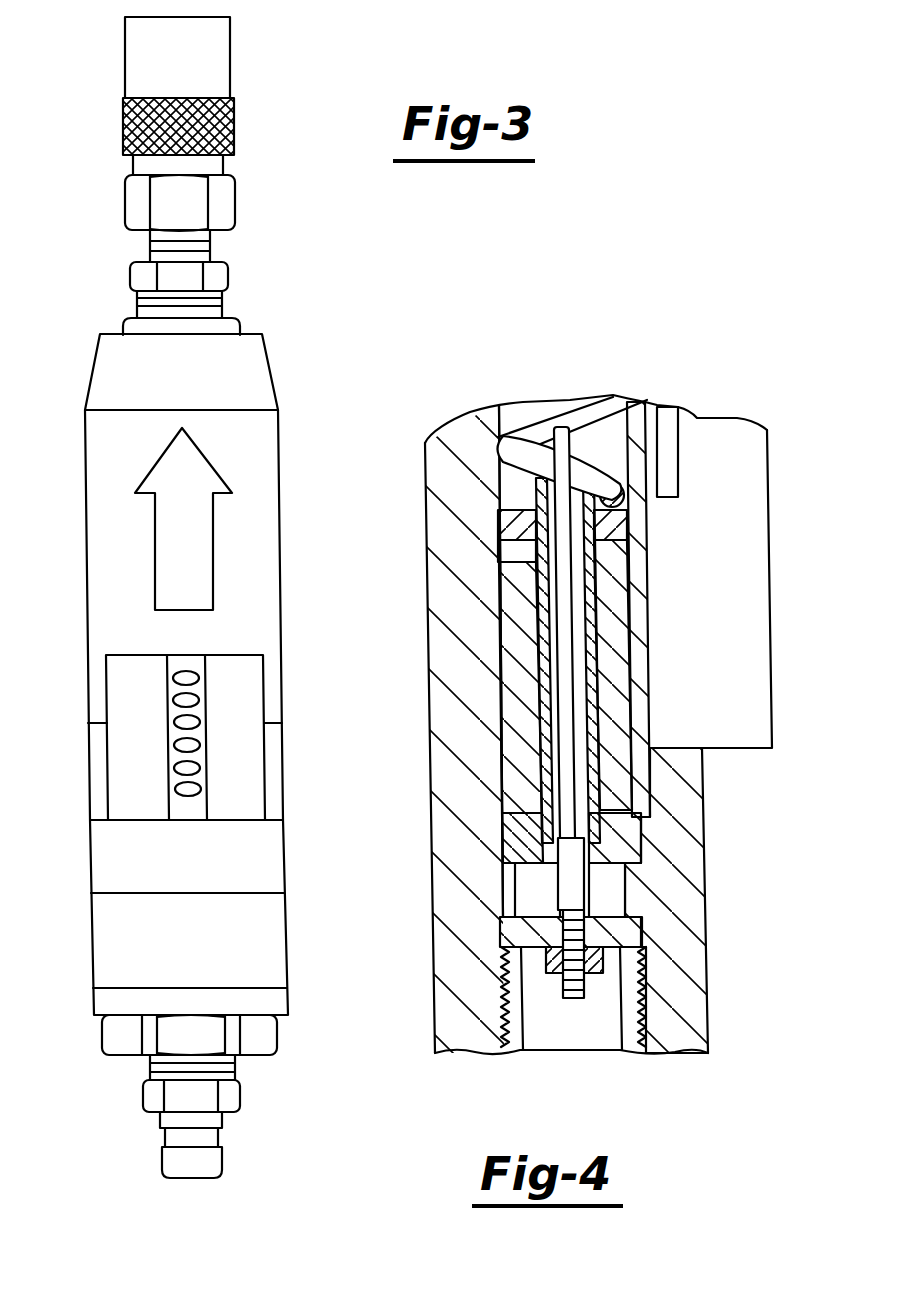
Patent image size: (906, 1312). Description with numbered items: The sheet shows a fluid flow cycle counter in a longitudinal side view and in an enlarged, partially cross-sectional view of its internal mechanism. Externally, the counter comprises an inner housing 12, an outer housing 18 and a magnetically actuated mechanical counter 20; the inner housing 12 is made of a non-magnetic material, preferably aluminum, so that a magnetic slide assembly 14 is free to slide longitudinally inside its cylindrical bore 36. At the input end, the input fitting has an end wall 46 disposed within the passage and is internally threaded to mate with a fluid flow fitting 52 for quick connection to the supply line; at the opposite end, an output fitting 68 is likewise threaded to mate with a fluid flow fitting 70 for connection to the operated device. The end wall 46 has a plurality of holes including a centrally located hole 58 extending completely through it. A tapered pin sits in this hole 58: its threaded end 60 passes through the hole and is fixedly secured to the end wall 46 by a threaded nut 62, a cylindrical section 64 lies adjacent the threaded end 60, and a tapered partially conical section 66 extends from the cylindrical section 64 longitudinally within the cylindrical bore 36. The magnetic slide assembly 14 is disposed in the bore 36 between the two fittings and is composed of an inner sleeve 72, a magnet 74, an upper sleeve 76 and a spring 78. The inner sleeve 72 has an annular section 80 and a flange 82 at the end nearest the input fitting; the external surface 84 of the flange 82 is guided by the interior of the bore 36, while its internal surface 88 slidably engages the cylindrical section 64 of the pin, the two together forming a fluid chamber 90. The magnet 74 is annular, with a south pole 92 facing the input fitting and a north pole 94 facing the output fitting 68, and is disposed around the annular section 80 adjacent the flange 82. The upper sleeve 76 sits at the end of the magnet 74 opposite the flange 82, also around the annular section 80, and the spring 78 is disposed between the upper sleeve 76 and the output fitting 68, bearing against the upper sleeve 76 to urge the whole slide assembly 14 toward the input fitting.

In FIG. 3, the inner housing 12 is at (108, 935).
In FIG. 4, the magnetic slide assembly 14 is at (510, 577).
In FIG. 3, the outer housing 18 is at (258, 378).
In FIG. 3, the magnetically actuated mechanical counter 20 is at (123, 687).
In FIG. 4, the magnetically actuated mechanical counter 20 is at (733, 552).
In FIG. 4, the cylindrical bore 36 is at (598, 437).
In FIG. 4, the end wall 46 is at (628, 942).
In FIG. 3, the fluid flow fitting 52 is at (210, 1160).
In FIG. 4, the centrally located hole 58 is at (587, 928).
In FIG. 4, the threaded end 60 is at (573, 1000).
In FIG. 4, the threaded nut 62 is at (598, 957).
In FIG. 4, the cylindrical section 64 is at (578, 887).
In FIG. 4, the tapered partially conical section 66 is at (565, 665).
In FIG. 3, the output fitting 68 is at (140, 278).
In FIG. 3, the fluid flow fitting 70 is at (210, 68).
In FIG. 4, the inner sleeve 72 is at (615, 818).
In FIG. 4, the magnet 74 is at (512, 678).
In FIG. 4, the upper sleeve 76 is at (498, 517).
In FIG. 4, the spring 78 is at (500, 443).
In FIG. 4, the annular section 80 is at (545, 615).
In FIG. 4, the flange 82 is at (517, 838).
In FIG. 4, the external surface 84 is at (500, 885).
In FIG. 4, the internal surface 88 is at (613, 822).
In FIG. 4, the fluid chamber 90 is at (527, 900).
In FIG. 4, the south pole 92 is at (512, 790).
In FIG. 4, the north pole 94 is at (505, 553).